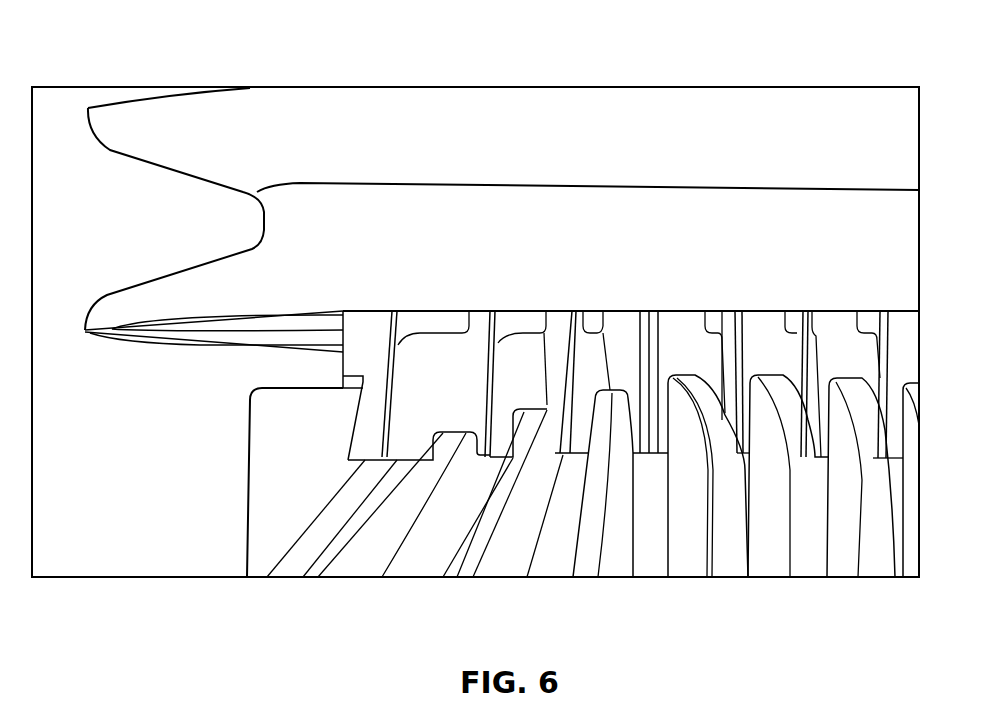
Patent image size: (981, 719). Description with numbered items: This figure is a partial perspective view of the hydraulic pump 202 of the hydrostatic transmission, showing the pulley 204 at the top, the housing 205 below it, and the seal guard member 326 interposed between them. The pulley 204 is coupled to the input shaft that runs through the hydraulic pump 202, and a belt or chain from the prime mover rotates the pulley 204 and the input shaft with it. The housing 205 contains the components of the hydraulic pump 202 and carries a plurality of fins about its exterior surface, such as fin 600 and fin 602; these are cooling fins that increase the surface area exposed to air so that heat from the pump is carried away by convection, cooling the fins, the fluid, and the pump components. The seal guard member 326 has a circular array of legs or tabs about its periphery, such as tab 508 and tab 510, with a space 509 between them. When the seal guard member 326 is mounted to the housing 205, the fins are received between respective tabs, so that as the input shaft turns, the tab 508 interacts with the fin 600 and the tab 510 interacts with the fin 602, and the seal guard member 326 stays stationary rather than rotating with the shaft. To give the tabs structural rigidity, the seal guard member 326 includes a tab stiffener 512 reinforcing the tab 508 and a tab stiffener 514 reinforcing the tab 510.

The hydraulic pump 202 is at (142, 50).
The pulley 204 is at (382, 92).
The housing 205 is at (247, 510).
The seal guard member 326 is at (383, 342).
The tab 508 is at (385, 556).
The space 509 is at (549, 427).
The tab 510 is at (575, 457).
The tab stiffener 512 is at (488, 366).
The tab stiffener 514 is at (568, 366).
The fin 600 is at (462, 545).
The fin 602 is at (585, 557).